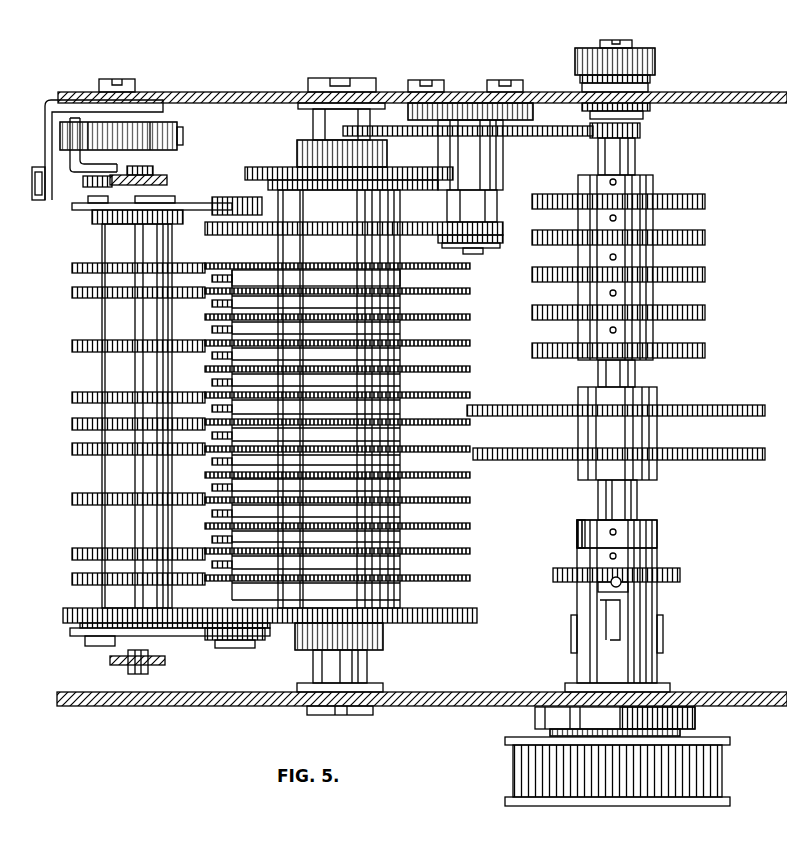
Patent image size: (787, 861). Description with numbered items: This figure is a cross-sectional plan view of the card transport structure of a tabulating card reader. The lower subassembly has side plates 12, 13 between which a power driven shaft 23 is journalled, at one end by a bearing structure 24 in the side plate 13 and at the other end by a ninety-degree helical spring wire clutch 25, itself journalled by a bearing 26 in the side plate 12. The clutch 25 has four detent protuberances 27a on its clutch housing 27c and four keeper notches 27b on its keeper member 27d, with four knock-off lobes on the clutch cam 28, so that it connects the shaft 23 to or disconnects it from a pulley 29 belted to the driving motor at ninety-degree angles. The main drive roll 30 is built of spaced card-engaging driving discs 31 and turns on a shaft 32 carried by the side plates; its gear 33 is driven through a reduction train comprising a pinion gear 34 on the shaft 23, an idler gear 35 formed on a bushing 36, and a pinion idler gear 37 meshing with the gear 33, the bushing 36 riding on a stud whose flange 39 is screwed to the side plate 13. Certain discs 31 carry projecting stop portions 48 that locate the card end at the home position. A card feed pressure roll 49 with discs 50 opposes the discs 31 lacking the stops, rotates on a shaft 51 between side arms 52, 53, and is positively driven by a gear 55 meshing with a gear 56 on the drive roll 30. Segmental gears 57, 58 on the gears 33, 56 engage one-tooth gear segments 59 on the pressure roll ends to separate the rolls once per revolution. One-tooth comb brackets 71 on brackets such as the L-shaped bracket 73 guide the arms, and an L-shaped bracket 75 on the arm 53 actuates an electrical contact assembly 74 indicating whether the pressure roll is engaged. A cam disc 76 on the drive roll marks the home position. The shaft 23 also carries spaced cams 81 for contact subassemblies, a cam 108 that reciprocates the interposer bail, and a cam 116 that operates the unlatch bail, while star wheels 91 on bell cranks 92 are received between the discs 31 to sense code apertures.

The side plate 12 is at (270, 706).
The side plate 13 is at (236, 92).
The power driven shaft 23 is at (637, 496).
The bearing structure 24 is at (655, 58).
The helical spring wire clutch 25 is at (676, 608).
The bearing 26 is at (695, 714).
The detent protuberances 27a is at (663, 634).
The keeper notches 27b is at (657, 524).
The clutch housing 27c is at (577, 600).
The keeper member 27d is at (577, 520).
The clutch cam 28 is at (680, 570).
The pulley 29 is at (715, 768).
The tabulating card main drive roll 30 is at (400, 596).
The card-engaging driving discs 31 is at (466, 341).
The shaft 32 is at (367, 668).
The gear 33 is at (262, 236).
The pinion gear 34 is at (640, 132).
The idler gear 35 is at (530, 136).
The bushing 36 is at (503, 172).
The pinion idler gear 37 is at (500, 243).
The flange 39 is at (462, 103).
The projecting stop portions 48 is at (208, 368).
The card feed pressure roll 49 is at (102, 470).
The discs 50 is at (80, 580).
The shaft 51 is at (128, 668).
The side arm 52 is at (165, 662).
The side arm 53 is at (155, 172).
The gear 55 is at (63, 614).
The gear 56 is at (445, 623).
The segmental gear 57 is at (226, 203).
The segmental gear 58 is at (272, 640).
The one-tooth gear segments 59 is at (70, 207).
The one-tooth comb brackets 71 is at (62, 195).
The L-shaped bracket 73 is at (47, 104).
The electrical contact assembly 74 is at (130, 135).
The L-shaped bracket 75 is at (72, 162).
The cam disc 76 is at (290, 178).
The cams 81 is at (705, 238).
The star wheels 91 is at (212, 332).
The bell cranks 92 is at (290, 275).
The cam 108 is at (668, 408).
The cam 116 is at (680, 452).